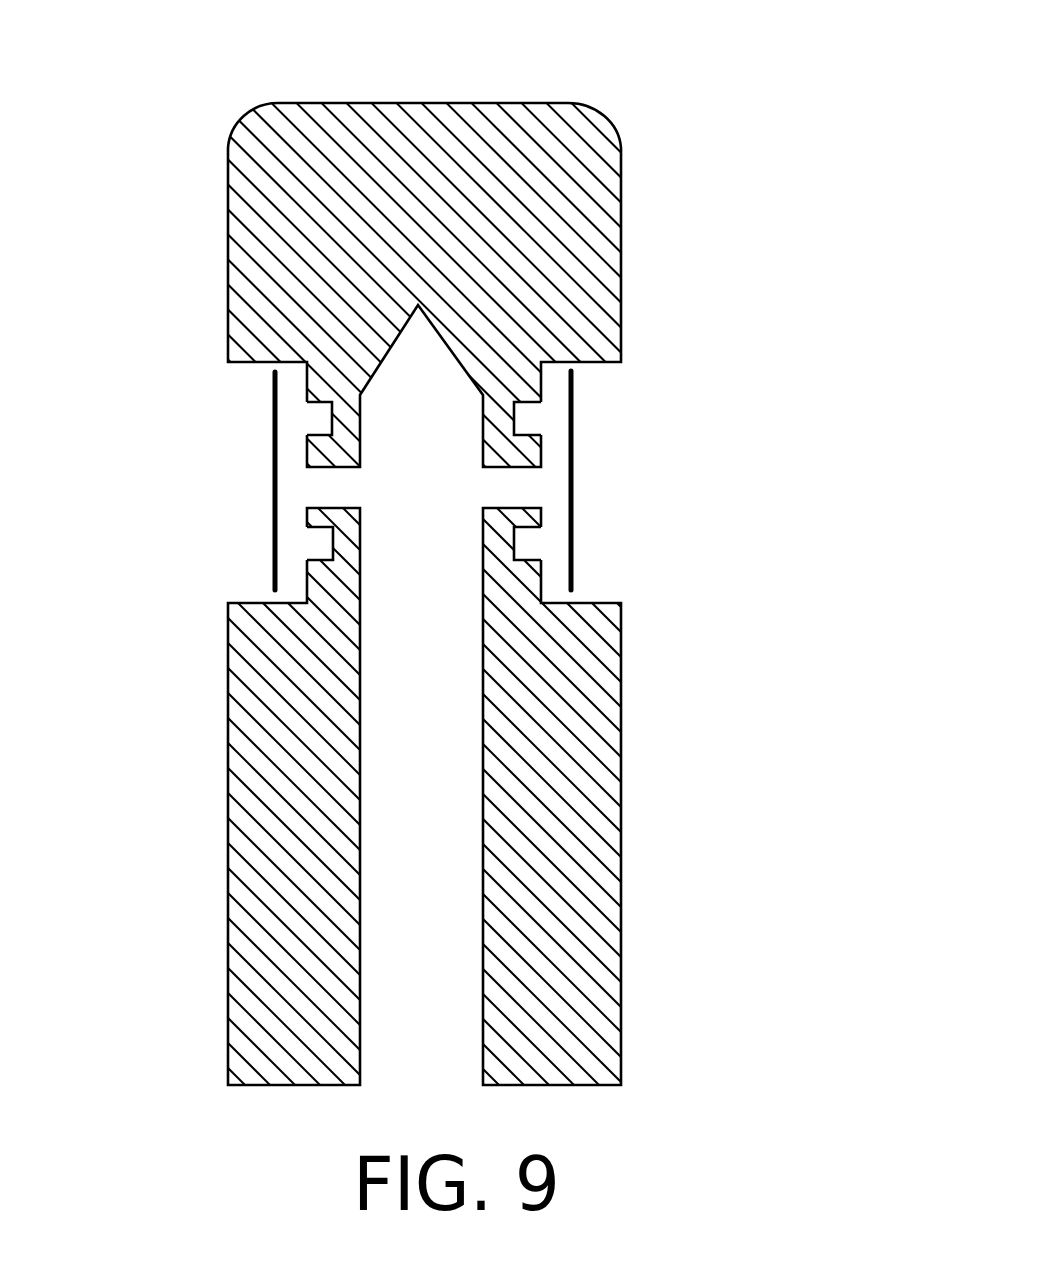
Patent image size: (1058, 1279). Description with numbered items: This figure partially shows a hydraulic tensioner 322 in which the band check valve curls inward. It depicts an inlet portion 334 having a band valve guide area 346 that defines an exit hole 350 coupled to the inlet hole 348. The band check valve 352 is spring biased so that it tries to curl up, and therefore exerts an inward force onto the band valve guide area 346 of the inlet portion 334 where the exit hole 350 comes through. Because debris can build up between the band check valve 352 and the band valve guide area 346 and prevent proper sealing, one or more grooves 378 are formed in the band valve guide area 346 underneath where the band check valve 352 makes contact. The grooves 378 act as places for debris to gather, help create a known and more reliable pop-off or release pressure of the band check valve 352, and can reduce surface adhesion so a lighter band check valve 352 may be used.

The fastener assembly 322 is at (728, 120).
The inlet portion 334 is at (621, 995).
The band valve guide area 346 is at (222, 527).
The inlet hole 348 is at (460, 864).
The exit hole 350 is at (330, 483).
The band check valve 352 is at (273, 477).
The grooves 378 is at (318, 417).